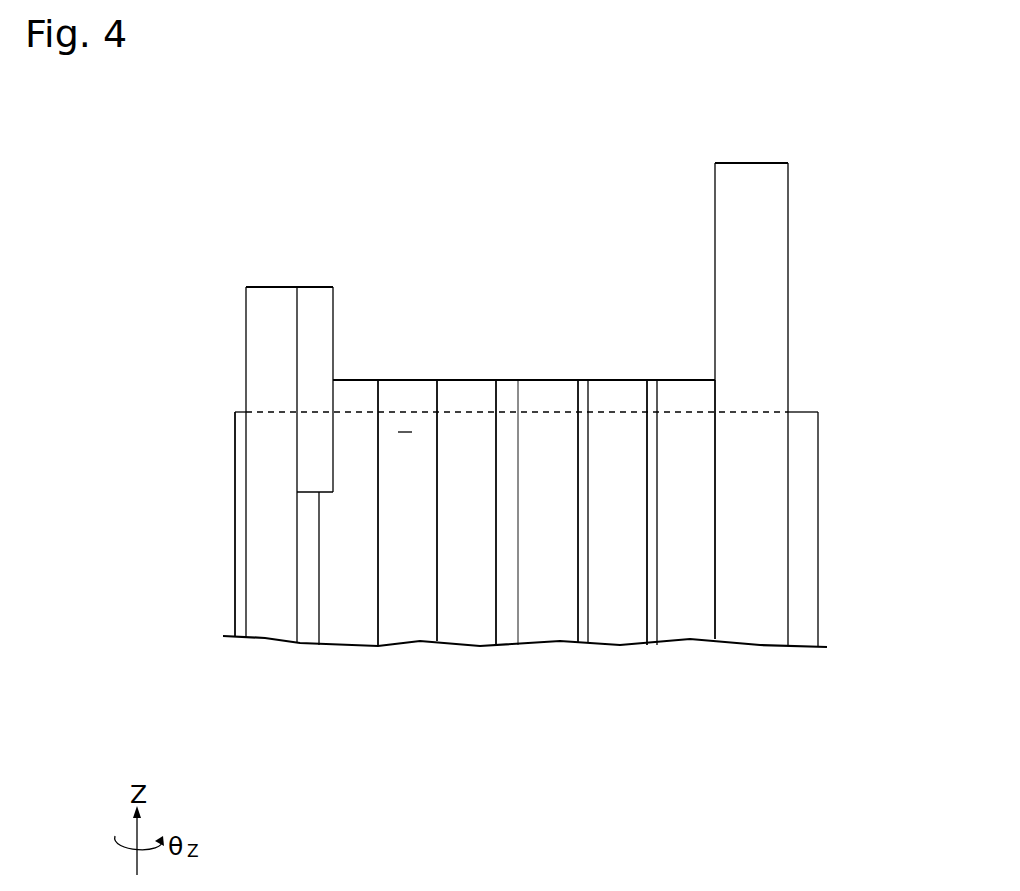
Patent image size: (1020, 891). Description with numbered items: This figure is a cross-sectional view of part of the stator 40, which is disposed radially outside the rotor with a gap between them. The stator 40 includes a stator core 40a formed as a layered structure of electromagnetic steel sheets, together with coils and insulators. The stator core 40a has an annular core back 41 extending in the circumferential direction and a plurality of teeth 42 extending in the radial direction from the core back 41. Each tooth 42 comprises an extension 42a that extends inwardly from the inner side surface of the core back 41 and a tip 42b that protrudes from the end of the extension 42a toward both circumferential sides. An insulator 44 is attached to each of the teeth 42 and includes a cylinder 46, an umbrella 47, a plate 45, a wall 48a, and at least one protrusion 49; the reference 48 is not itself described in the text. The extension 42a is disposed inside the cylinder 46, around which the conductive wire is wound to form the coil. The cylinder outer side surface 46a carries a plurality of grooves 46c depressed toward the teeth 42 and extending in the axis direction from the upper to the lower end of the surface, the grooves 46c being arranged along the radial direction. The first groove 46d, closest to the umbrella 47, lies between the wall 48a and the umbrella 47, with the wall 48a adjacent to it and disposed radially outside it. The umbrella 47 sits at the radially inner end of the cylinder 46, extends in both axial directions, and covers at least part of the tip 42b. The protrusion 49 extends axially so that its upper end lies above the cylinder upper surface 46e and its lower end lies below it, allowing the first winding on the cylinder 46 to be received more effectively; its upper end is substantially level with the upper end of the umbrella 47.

The stator 40 is at (826, 182).
The stator core 40a is at (819, 399).
The core back 41 is at (808, 575).
The teeth 42 is at (622, 262).
The extension 42a is at (550, 450).
The tip 42b is at (237, 557).
The insulator 44 is at (800, 277).
The plate 45 is at (751, 168).
The cylinder 46 is at (510, 318).
The cylinder outer side surface 46a is at (463, 385).
The groove 46c is at (714, 608).
The first groove 46d is at (320, 624).
The cylinder upper surface 46e is at (383, 378).
The umbrella 47 is at (278, 292).
The groove portion 48 is at (413, 625).
The wall 48a is at (405, 432).
The protrusion 49 is at (312, 292).